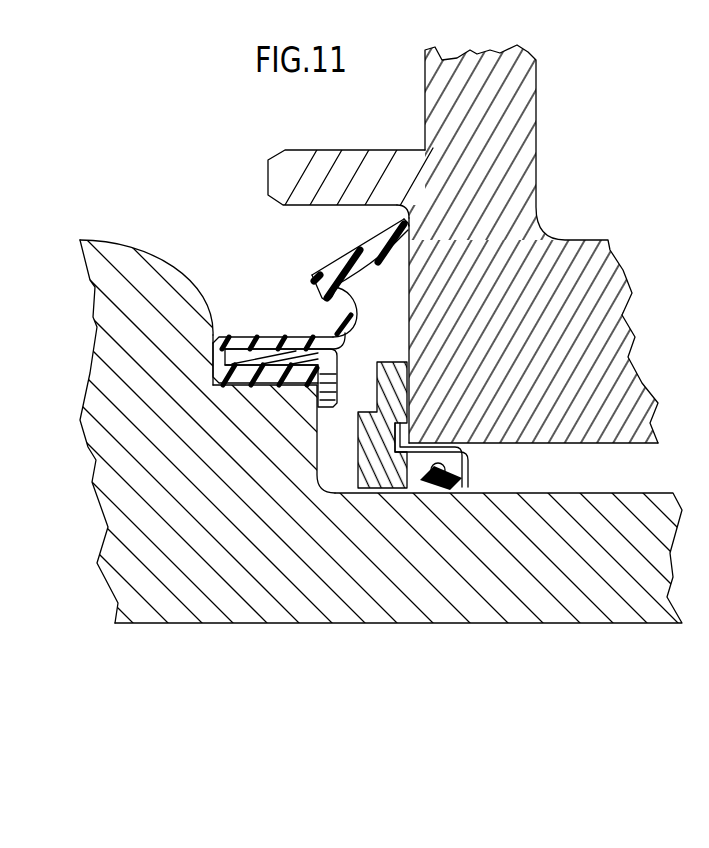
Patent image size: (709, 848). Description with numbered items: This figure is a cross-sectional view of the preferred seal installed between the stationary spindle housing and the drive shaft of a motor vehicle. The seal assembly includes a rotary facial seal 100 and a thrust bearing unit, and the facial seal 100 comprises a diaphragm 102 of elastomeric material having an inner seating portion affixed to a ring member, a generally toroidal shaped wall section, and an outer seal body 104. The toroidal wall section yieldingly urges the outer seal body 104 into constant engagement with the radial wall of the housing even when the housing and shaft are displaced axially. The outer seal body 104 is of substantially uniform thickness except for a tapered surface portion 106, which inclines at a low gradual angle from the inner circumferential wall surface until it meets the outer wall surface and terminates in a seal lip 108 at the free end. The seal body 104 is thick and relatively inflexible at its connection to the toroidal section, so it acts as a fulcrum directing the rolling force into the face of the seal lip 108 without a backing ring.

The rotary facial seal 100 is at (303, 297).
The diaphragm 102 is at (358, 321).
The outer seal body 104 is at (326, 255).
The tapered surface portion 106 is at (413, 220).
The seal lip 108 is at (413, 217).